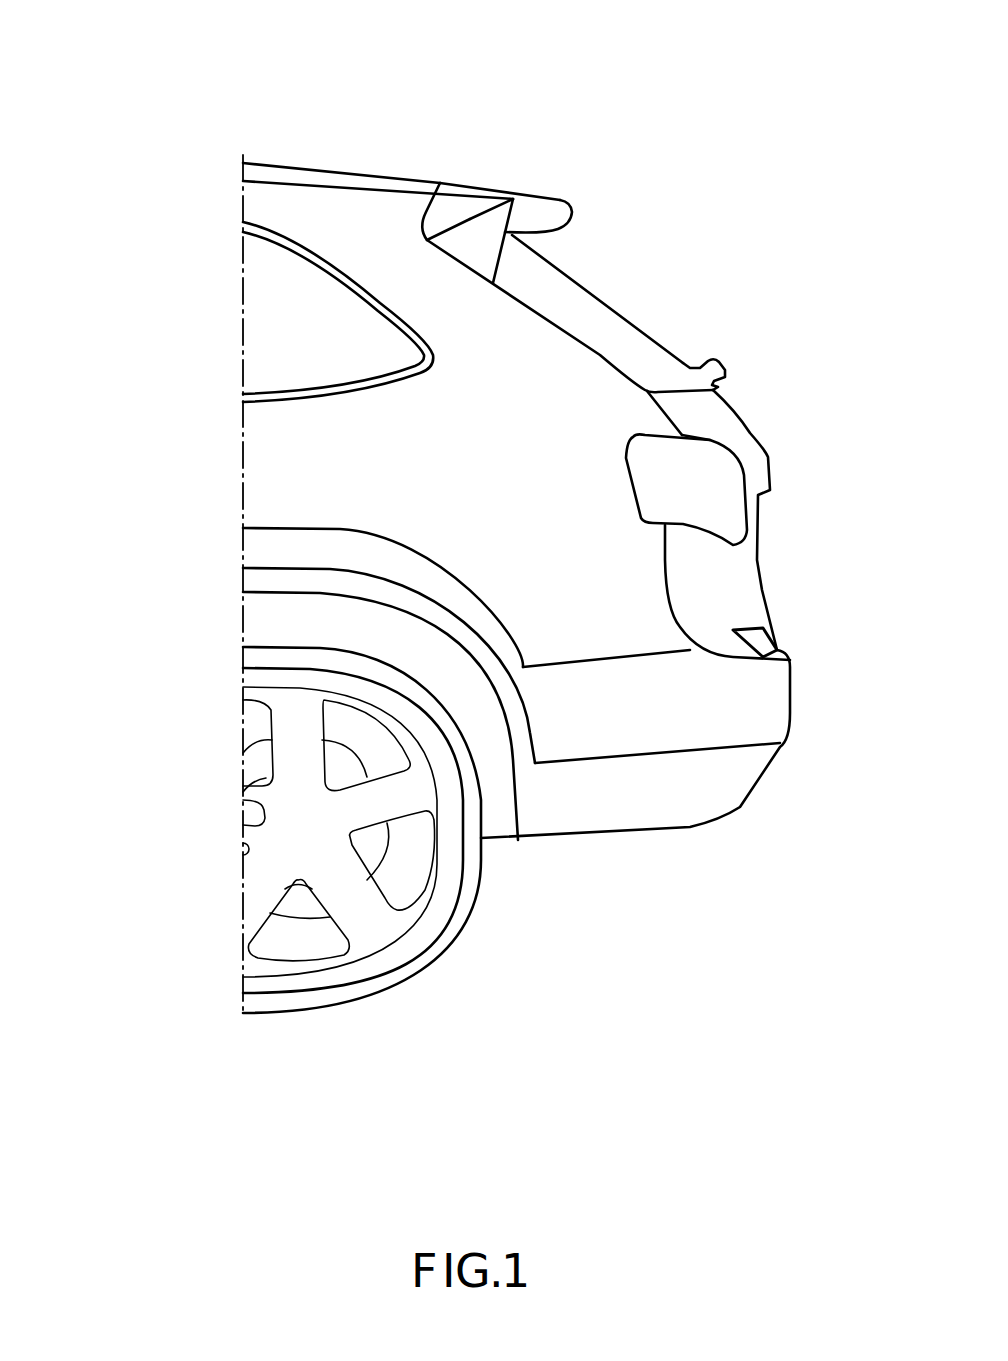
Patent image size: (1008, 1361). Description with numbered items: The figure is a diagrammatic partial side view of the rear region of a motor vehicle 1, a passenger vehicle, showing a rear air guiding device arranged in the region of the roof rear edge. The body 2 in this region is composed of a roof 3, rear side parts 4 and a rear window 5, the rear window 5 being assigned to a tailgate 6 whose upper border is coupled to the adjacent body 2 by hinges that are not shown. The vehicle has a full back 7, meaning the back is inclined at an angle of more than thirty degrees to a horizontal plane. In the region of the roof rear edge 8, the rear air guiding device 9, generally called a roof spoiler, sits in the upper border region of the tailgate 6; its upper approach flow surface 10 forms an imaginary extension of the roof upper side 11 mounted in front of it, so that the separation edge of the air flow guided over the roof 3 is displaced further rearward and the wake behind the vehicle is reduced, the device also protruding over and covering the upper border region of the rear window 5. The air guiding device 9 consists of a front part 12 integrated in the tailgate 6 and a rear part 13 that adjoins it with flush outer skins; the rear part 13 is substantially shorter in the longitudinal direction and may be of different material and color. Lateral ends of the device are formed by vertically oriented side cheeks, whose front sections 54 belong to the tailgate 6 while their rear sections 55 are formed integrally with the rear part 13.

The motor vehicle 1 is at (216, 246).
The body 2 is at (218, 529).
The roof 3 is at (246, 170).
The rear side parts 4 is at (282, 420).
The rear window 5 is at (670, 367).
The tailgate 6 is at (735, 420).
The full back 7 is at (604, 273).
The roof rear edge 8 is at (445, 177).
The rear air guiding device 9 is at (587, 221).
The upper approach flow surface 10 is at (498, 184).
The roof upper side 11 is at (297, 168).
The front part 12 is at (455, 215).
The rear part 13 is at (555, 203).
The front sections of the side cheeks 54 is at (422, 222).
The rear sections of the side cheeks 55 is at (475, 247).